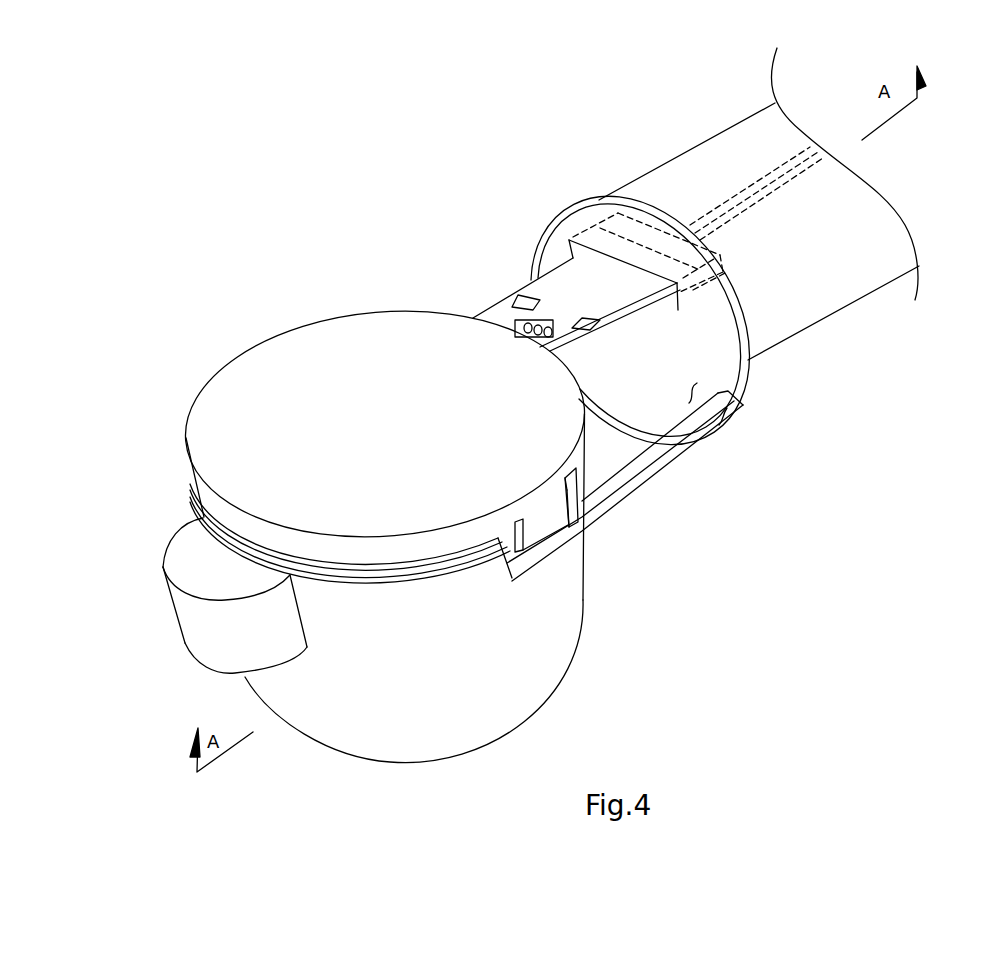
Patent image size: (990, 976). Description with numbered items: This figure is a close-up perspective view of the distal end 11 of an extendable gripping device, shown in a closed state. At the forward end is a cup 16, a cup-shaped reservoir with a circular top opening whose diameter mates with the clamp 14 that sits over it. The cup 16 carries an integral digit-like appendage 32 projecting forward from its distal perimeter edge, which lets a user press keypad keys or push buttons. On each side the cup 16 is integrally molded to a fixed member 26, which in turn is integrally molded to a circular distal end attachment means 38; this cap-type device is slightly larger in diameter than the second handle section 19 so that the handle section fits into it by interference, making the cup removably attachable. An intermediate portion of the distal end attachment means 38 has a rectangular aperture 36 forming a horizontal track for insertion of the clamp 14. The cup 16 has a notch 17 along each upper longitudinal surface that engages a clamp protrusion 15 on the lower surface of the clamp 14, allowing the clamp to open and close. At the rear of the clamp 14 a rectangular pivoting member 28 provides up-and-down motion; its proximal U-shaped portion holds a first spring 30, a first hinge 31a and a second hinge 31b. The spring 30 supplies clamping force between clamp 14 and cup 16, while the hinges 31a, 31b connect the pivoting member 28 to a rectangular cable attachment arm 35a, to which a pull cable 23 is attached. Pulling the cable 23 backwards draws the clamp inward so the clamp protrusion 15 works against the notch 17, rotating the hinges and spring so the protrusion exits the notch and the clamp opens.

The distal end 11 is at (381, 182).
The clamp 14 is at (385, 355).
The clamp protrusion 15 is at (545, 527).
The cup 16 is at (358, 720).
The notch 17 is at (530, 563).
The second handle section 19 is at (683, 180).
The pull cable 23 is at (720, 208).
The fixed member 26 is at (677, 427).
The pivoting member 28 is at (516, 300).
The first spring 30 is at (546, 326).
The first hinge 31a is at (518, 300).
The second hinge 31b is at (588, 315).
The digit-like appendage 32 is at (205, 633).
The cable attachment arm 35a is at (688, 282).
The rectangular aperture 36 is at (670, 283).
The distal end attachment means 38 is at (700, 394).